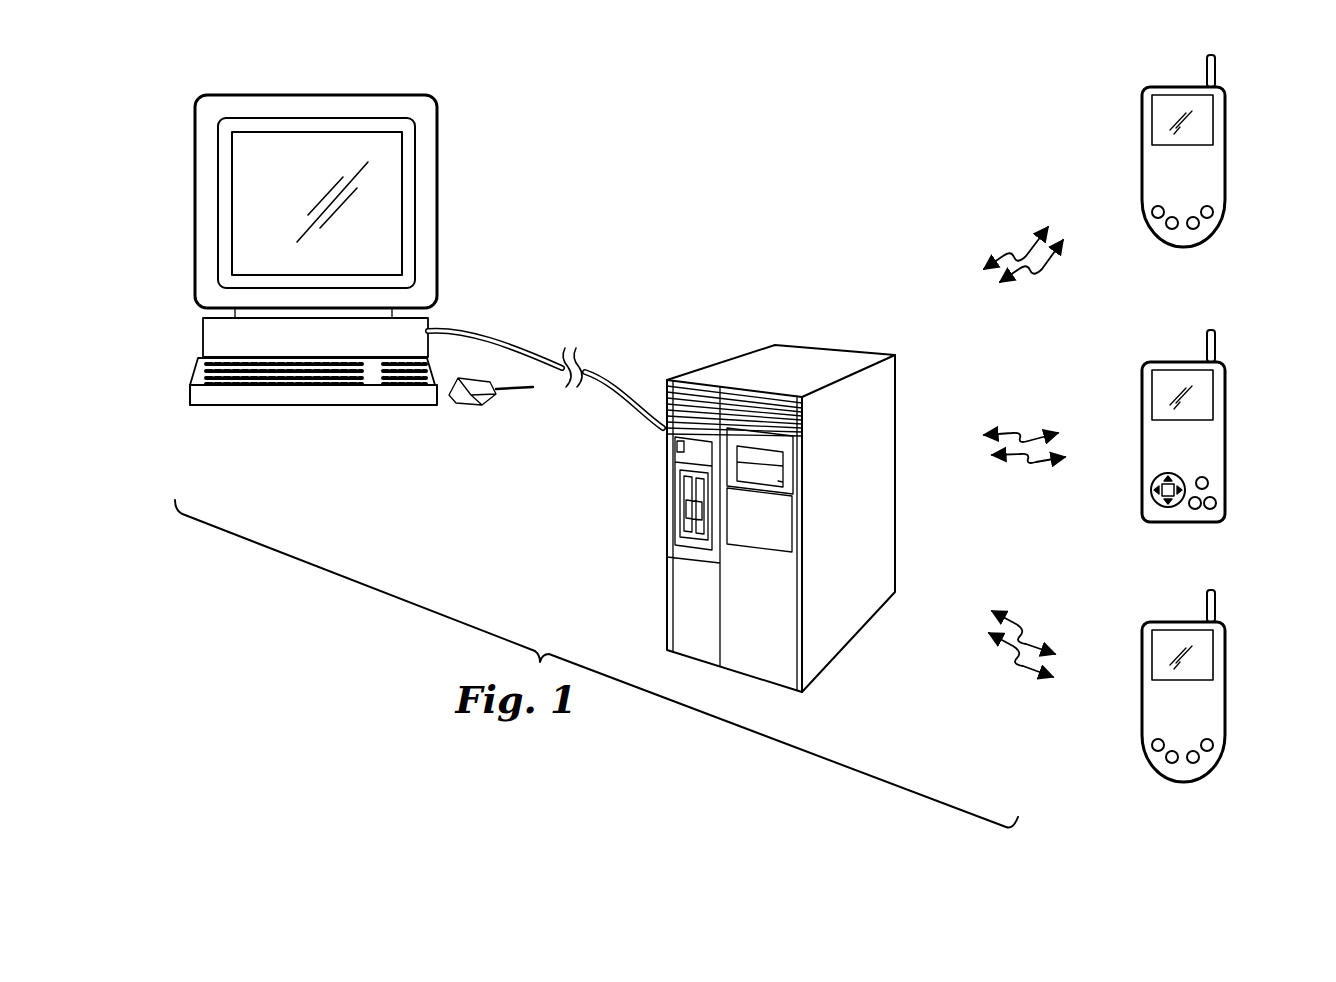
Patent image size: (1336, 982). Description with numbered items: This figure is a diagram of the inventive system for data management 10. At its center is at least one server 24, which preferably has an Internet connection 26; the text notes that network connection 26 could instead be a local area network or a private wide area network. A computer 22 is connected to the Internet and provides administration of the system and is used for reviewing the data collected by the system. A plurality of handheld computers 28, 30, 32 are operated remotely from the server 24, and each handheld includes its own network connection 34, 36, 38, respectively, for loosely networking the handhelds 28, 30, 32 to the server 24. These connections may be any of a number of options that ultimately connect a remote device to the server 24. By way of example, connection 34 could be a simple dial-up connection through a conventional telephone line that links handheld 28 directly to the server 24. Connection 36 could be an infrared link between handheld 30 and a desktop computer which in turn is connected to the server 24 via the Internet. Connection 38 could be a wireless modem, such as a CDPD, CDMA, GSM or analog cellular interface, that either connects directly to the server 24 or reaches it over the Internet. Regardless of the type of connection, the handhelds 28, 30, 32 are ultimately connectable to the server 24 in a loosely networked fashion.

The system for data management 10 is at (426, 630).
The computer 22 is at (438, 145).
The server 24 is at (800, 352).
The Internet connection 26 is at (602, 372).
The handheld computer 28 is at (1227, 117).
The handheld computer 30 is at (1227, 400).
The handheld computer 32 is at (1227, 692).
The network connection 34 is at (1008, 245).
The network connection 36 is at (1022, 427).
The network connection 38 is at (1012, 660).